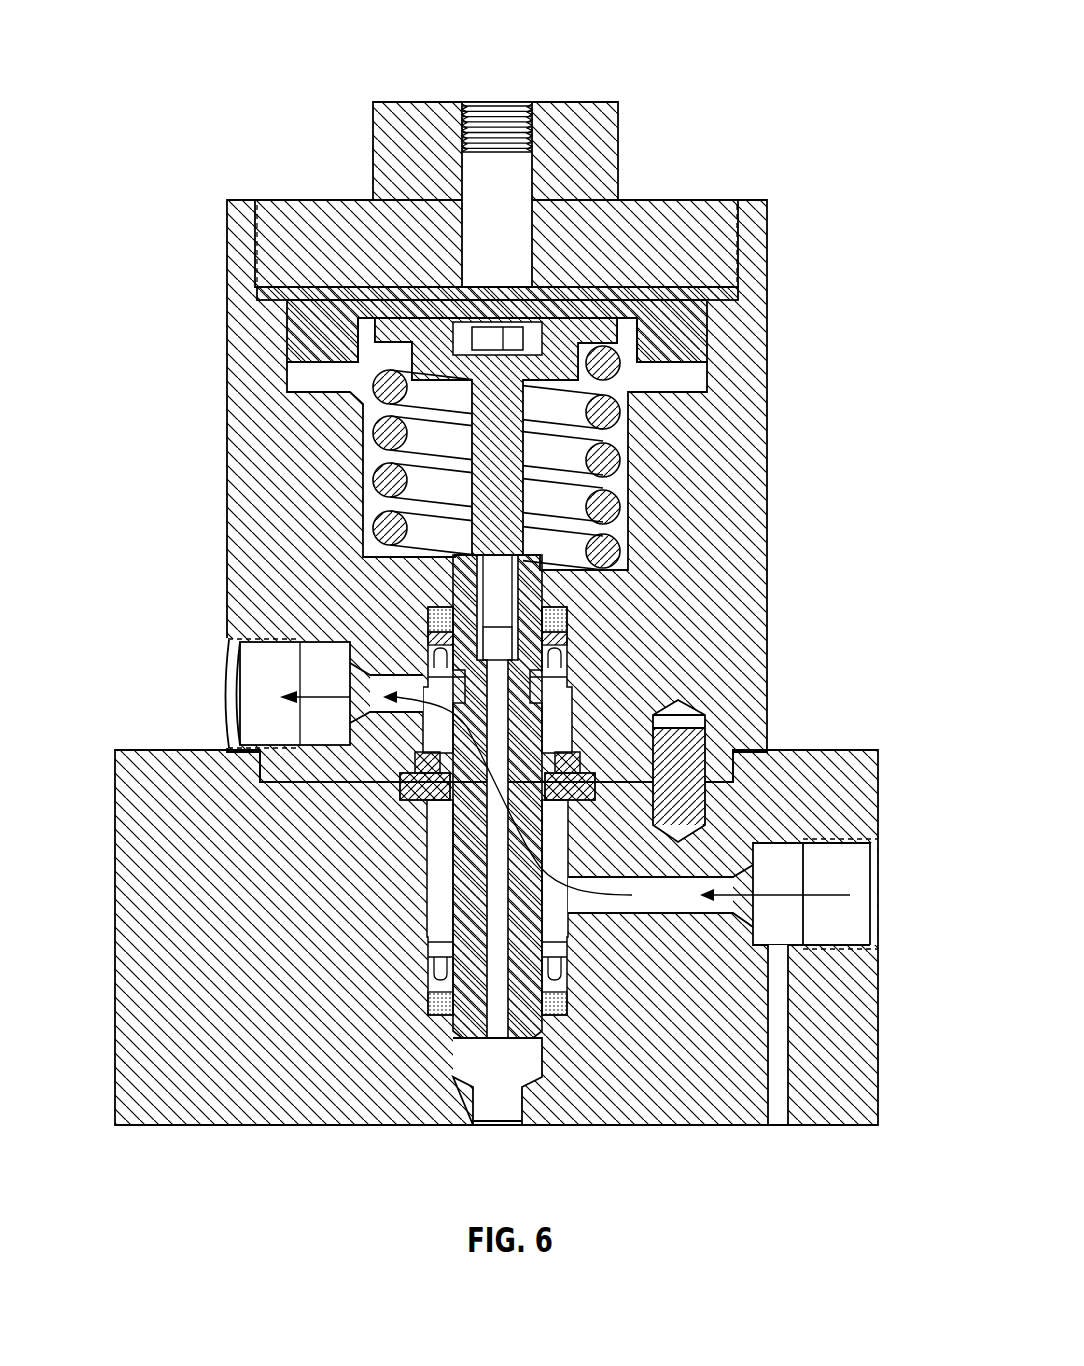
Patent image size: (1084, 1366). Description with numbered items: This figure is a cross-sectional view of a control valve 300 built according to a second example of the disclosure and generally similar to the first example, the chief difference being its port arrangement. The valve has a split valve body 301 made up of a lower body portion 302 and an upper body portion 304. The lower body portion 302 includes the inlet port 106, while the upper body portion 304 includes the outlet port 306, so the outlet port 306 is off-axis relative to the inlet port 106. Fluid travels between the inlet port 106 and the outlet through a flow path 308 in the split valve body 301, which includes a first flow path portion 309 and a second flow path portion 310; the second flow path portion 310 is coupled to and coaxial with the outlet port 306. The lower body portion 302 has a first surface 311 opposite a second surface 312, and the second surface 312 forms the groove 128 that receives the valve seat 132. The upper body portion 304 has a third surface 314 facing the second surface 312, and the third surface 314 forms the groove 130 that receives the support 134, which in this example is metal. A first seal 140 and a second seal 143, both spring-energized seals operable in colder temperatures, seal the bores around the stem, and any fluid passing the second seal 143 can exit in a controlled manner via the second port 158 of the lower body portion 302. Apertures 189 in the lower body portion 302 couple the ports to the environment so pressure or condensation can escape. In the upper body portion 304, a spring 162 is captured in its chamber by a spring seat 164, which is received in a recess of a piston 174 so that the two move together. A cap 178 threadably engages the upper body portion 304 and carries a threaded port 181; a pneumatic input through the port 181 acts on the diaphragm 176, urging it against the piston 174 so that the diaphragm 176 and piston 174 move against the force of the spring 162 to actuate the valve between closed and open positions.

The control valve 300 is at (536, 565).
The threaded port 181 is at (532, 126).
The diaphragm 176 is at (257, 297).
The cap 178 is at (710, 228).
The spring seat 164 is at (615, 338).
The spring 162 is at (605, 410).
The piston 174 is at (307, 347).
The split valve body 301 is at (283, 477).
The second seal 143 is at (555, 628).
The first flow path portion 309 is at (417, 752).
The upper body portion 304 is at (755, 567).
The groove 130 is at (392, 705).
The support 134 is at (655, 720).
The outlet port 306 is at (230, 748).
The second surface 312 is at (850, 752).
The third surface 314 is at (285, 770).
The second flow path portion 310 is at (863, 865).
The flow path 308 is at (680, 906).
The valve seat 132 is at (402, 790).
The inlet port 106 is at (870, 948).
The groove 128 is at (405, 808).
The lower body portion 302 is at (878, 1022).
The first seal 140 is at (430, 992).
The second port 158 is at (518, 1105).
The first surface 311 is at (622, 1127).
The apertures 189 is at (777, 1113).